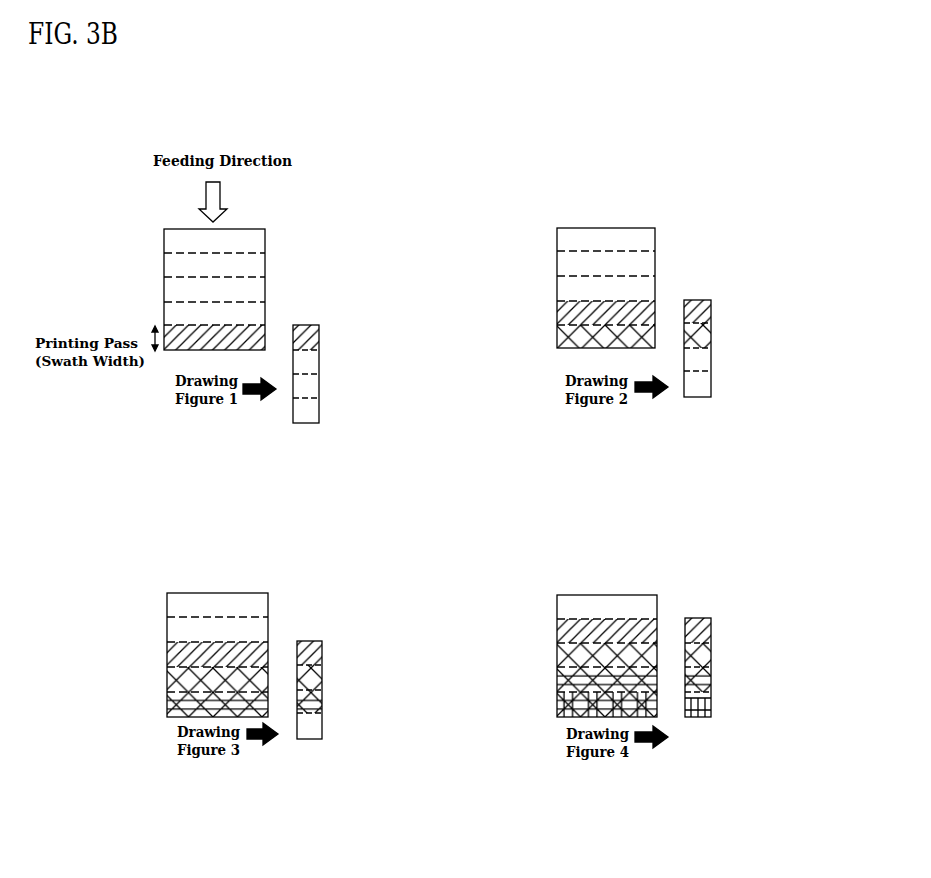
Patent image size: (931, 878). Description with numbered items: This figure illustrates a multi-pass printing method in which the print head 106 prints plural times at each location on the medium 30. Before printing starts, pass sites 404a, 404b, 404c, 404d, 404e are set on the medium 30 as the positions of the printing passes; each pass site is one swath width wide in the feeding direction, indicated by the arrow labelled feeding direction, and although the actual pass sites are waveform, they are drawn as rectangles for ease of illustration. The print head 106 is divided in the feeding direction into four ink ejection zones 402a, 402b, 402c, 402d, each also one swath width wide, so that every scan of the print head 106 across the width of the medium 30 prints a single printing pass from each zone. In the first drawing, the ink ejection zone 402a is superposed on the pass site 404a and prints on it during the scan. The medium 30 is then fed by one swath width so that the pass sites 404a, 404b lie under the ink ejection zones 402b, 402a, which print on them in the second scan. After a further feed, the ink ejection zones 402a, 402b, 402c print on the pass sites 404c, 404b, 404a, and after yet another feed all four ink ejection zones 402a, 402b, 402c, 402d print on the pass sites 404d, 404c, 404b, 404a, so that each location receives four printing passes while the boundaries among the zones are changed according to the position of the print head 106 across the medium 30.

The medium 30 is at (163, 228).
The print head 106 is at (306, 424).
The pass site 404a is at (163, 351).
The pass site 404b is at (164, 313).
The pass site 404c is at (164, 289).
The pass site 404d is at (265, 266).
The pass site 404e is at (265, 241).
The ink ejection zone 402a is at (320, 336).
The ink ejection zone 402b is at (320, 360).
The ink ejection zone 402c is at (320, 385).
The ink ejection zone 402d is at (320, 410).